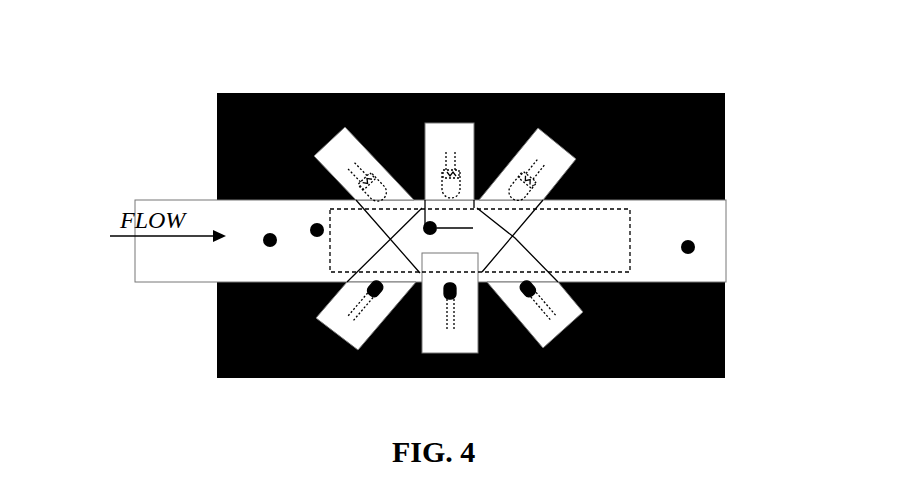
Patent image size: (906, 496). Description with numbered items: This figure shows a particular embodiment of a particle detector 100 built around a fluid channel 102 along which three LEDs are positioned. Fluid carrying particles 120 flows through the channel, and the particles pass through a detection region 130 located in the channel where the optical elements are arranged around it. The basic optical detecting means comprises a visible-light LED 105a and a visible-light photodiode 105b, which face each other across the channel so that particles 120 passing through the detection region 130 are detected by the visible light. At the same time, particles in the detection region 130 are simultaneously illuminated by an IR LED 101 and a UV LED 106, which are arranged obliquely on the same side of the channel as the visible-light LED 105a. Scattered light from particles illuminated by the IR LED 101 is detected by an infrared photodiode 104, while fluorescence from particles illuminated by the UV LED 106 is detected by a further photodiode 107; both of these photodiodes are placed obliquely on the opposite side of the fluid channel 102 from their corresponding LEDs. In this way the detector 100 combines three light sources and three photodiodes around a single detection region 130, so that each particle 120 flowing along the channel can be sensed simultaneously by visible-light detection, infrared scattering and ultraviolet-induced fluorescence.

The microfluidic flow cytometry device 100 is at (142, 62).
The IR LED 101 is at (375, 198).
The fluid channel 102 is at (705, 215).
The infrared photodiode 104 is at (368, 284).
The visible-light LED 105a is at (452, 200).
The visible-light photodiode 105b is at (452, 284).
The UV LED 106 is at (512, 198).
The photodiode 107 is at (527, 284).
The particles 120 is at (695, 247).
The detection region 130 is at (630, 237).